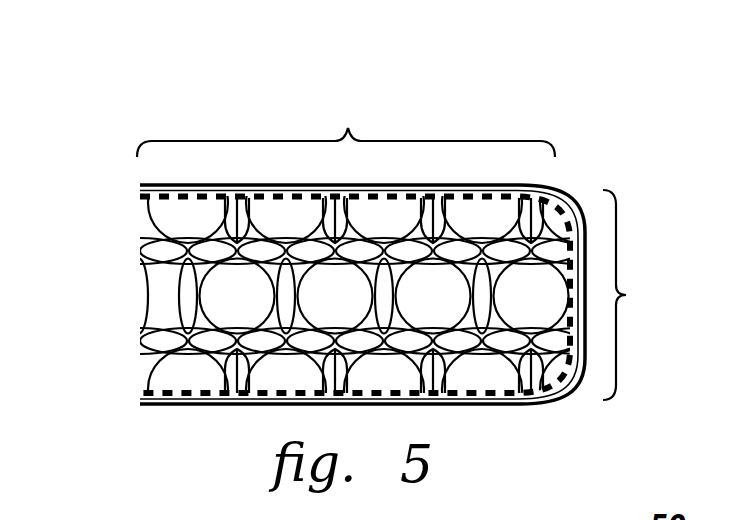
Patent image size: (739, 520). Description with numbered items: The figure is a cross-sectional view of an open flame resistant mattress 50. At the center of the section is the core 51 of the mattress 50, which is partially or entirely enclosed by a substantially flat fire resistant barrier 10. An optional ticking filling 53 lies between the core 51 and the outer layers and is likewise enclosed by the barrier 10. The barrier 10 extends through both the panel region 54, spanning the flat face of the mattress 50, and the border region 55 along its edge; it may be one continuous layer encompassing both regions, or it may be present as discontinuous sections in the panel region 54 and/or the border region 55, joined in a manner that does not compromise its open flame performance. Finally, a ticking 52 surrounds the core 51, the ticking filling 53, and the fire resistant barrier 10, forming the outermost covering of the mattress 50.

The open flame resistant mattress 50 is at (630, 148).
The core 51 is at (200, 275).
The ticking 52 is at (210, 405).
The ticking filling 53 is at (158, 340).
The fire resistant barrier 10 is at (142, 396).
The panel region 54 is at (637, 295).
The border region 55 is at (346, 125).